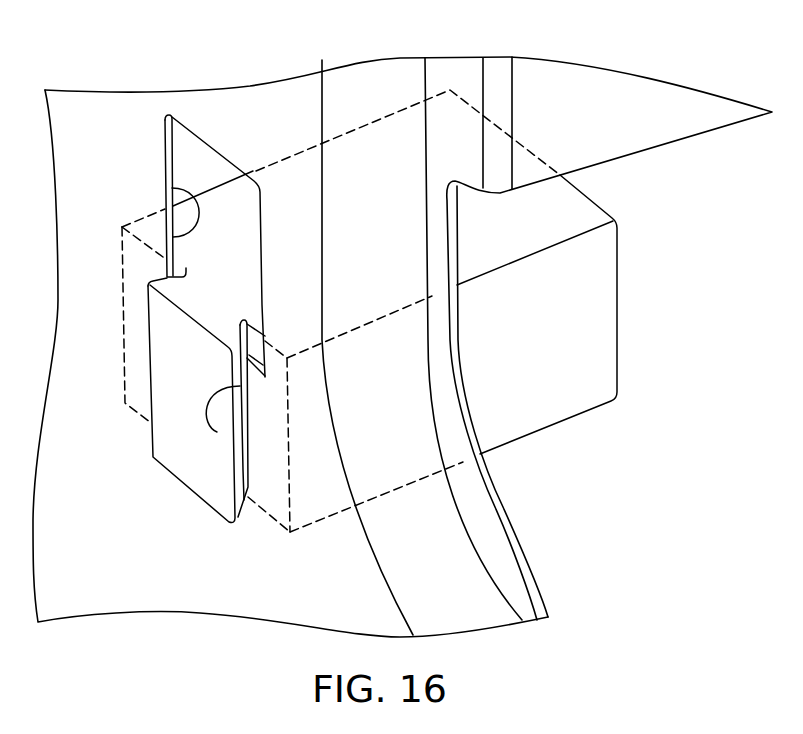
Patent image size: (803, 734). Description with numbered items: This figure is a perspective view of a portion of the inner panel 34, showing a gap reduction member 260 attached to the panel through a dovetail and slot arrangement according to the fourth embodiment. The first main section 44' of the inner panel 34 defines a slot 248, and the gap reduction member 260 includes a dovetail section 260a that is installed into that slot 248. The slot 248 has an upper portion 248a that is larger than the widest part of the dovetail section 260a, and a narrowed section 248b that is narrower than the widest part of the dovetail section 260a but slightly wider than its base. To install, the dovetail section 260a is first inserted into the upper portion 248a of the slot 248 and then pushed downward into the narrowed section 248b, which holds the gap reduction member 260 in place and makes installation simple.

The inner panel 34 is at (113, 79).
The first main section 44' is at (369, 109).
The slot 248 is at (167, 162).
The upper portion 248a is at (172, 188).
The narrowed section 248b is at (217, 432).
The gap reduction member 260 is at (563, 214).
The dovetail section 260a is at (193, 460).